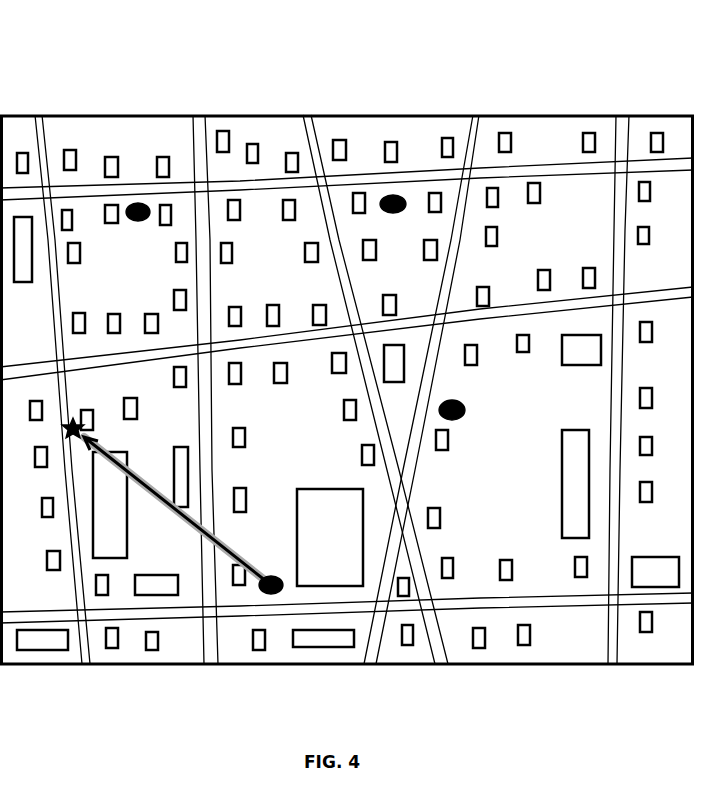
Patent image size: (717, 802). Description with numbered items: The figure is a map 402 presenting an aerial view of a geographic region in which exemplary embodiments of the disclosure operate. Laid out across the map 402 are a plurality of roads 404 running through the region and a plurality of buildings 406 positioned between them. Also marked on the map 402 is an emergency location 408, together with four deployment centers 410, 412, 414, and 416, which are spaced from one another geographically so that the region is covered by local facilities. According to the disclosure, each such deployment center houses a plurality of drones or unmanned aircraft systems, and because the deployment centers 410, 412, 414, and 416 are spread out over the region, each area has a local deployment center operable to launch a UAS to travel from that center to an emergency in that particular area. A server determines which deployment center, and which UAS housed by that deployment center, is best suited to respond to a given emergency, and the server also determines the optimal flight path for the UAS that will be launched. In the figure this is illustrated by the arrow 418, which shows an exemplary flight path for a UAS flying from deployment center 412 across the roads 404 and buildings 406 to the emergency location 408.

The map 402 is at (72, 77).
The roads 404 is at (213, 132).
The buildings 406 is at (354, 133).
The emergency location 408 is at (78, 458).
The deployment center 410 is at (143, 193).
The deployment center 412 is at (284, 607).
The deployment center 414 is at (423, 197).
The deployment center 416 is at (462, 431).
The arrow 418 is at (192, 540).